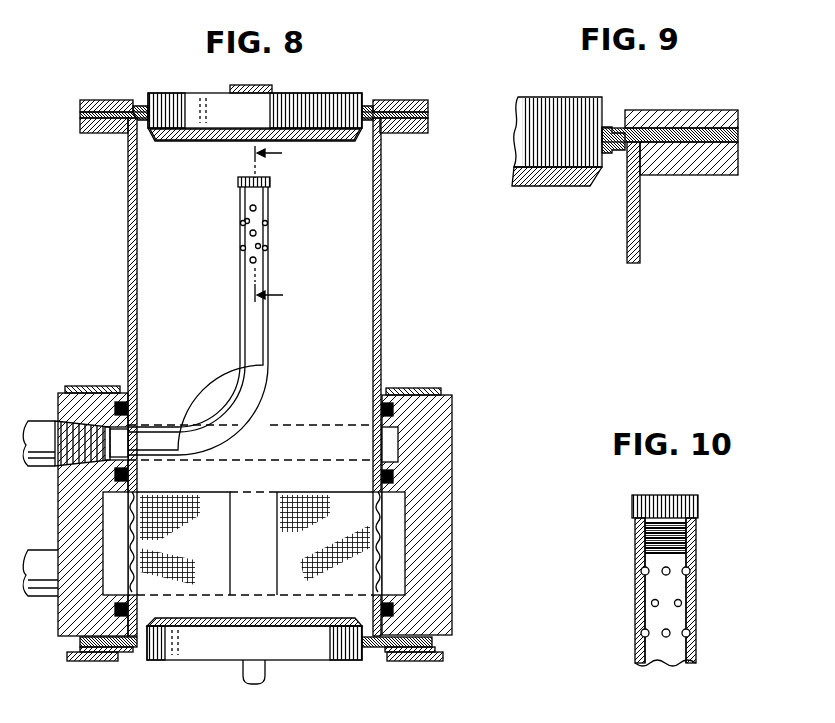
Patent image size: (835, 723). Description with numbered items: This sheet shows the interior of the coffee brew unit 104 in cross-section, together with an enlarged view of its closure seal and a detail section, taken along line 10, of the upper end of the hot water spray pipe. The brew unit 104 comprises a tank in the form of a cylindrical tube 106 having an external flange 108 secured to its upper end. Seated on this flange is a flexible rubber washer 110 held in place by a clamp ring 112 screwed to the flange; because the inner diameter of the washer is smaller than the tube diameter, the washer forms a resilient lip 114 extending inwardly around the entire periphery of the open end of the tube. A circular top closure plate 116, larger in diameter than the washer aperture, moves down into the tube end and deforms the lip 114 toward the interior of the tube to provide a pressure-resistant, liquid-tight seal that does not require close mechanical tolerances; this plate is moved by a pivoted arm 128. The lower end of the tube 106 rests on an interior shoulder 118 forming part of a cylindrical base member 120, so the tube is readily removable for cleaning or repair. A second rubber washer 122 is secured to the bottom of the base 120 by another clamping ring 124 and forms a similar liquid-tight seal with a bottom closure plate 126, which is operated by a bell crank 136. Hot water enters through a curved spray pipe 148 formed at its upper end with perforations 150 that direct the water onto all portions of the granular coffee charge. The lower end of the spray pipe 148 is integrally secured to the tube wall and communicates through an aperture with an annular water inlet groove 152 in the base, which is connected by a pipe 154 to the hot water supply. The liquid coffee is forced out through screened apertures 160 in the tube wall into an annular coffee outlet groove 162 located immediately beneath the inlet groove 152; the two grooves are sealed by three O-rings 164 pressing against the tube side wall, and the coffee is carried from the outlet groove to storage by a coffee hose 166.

In FIG. 8, the section line 10- 10 is at (282, 224).
In FIG. 8, the brew unit 104 is at (124, 266).
In FIG. 8, the cylindrical tube 106 is at (380, 268).
In FIG. 9, the cylindrical tube 106 is at (640, 236).
In FIG. 8, the external flange 108 is at (88, 125).
In FIG. 9, the external flange 108 is at (700, 158).
In FIG. 8, the flexible rubber washer 110 is at (80, 113).
In FIG. 9, the flexible rubber washer 110 is at (740, 135).
In FIG. 8, the clamp ring 112 is at (100, 100).
In FIG. 9, the clamp ring 112 is at (688, 118).
In FIG. 8, the resilient lip 114 is at (142, 120).
In FIG. 9, the resilient lip 114 is at (590, 138).
In FIG. 8, the top closure plate 116 is at (218, 108).
In FIG. 9, the top closure plate 116 is at (528, 140).
In FIG. 8, the interior shoulder 118 is at (118, 625).
In FIG. 8, the cylindrical base member 120 is at (430, 510).
In FIG. 8, the second rubber washer 122 is at (80, 642).
In FIG. 8, the clamping ring 124 is at (125, 655).
In FIG. 8, the bottom closure plate 126 is at (220, 630).
In FIG. 8, the pivoted arm 128 is at (248, 85).
In FIG. 8, the bell crank 136 is at (260, 683).
In FIG. 8, the curved spray pipe 148 is at (242, 362).
In FIG. 10, the curved spray pipe 148 is at (672, 662).
In FIG. 8, the perforations 150 is at (246, 231).
In FIG. 10, the perforations 150 is at (680, 603).
In FIG. 8, the annular water inlet groove 152 is at (117, 440).
In FIG. 8, the pipe 154 is at (27, 432).
In FIG. 8, the screened apertures 160 is at (160, 530).
In FIG. 8, the annular coffee outlet groove 162 is at (115, 548).
In FIG. 8, the O-rings 164 is at (113, 475).
In FIG. 8, the coffee hose 166 is at (33, 565).